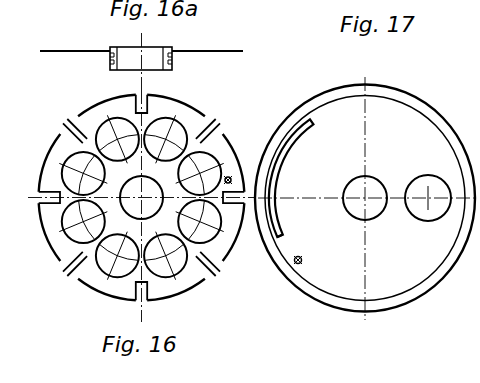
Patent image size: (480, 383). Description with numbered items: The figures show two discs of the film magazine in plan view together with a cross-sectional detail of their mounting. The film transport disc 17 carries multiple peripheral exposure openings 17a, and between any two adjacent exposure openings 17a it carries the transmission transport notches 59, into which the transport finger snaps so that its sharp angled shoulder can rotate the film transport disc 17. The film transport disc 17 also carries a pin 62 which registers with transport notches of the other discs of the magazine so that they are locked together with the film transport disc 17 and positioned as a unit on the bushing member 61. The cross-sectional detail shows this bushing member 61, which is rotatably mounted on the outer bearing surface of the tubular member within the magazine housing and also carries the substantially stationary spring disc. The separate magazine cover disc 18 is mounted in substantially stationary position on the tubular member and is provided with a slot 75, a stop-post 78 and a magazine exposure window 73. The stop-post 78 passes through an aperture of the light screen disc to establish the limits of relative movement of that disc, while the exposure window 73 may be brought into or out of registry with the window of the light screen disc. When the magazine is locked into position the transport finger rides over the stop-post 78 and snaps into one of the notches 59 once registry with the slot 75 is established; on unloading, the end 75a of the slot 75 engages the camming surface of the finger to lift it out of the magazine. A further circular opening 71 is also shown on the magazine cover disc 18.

In FIG. 16, the film transport disc 17 is at (56, 149).
In FIG. 16, the exposure openings 17a is at (104, 126).
In FIG. 16, the transmission transport notches 59 is at (71, 268).
In FIG. 16A, the bushing member 61 is at (173, 60).
In FIG. 16, the pin 62 is at (229, 177).
In FIG. 17, the magazine cover disc 18 is at (432, 119).
In FIG. 17, the central hole 71 is at (353, 183).
In FIG. 17, the magazine exposure window 73 is at (428, 221).
In FIG. 17, the slot 75 is at (284, 228).
In FIG. 17, the end of slot 75a is at (278, 234).
In FIG. 17, the stop-post 78 is at (304, 260).